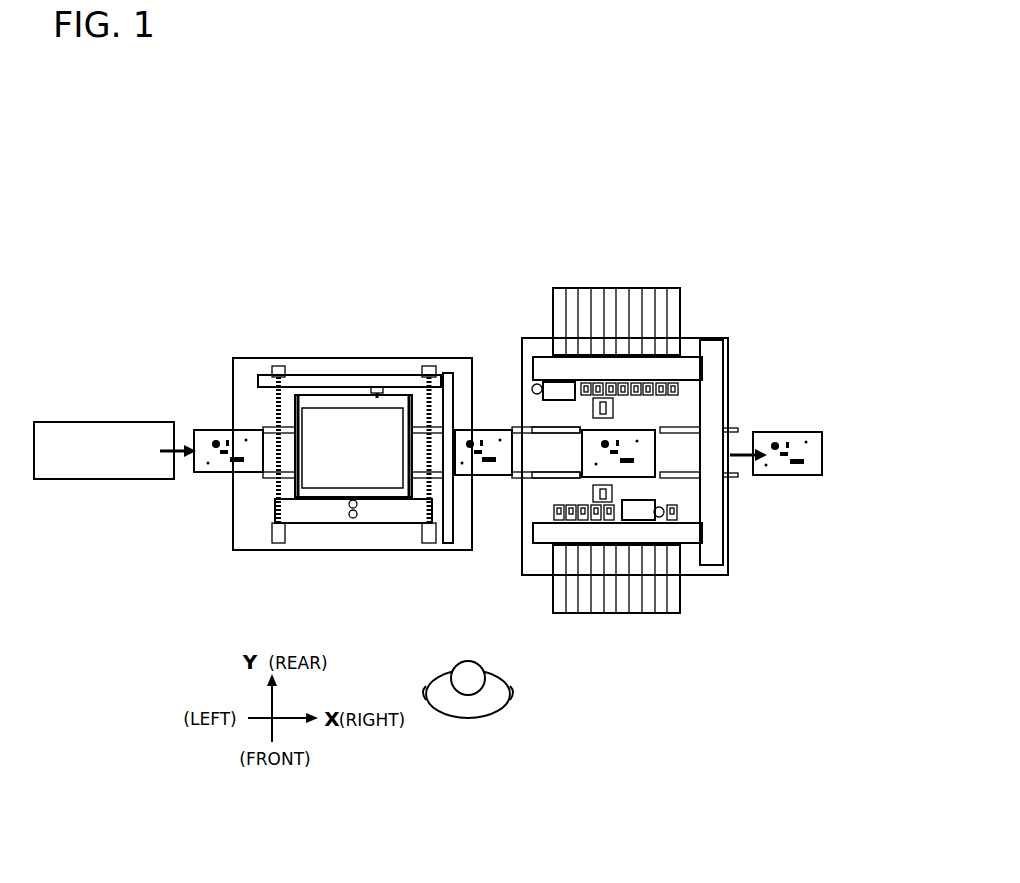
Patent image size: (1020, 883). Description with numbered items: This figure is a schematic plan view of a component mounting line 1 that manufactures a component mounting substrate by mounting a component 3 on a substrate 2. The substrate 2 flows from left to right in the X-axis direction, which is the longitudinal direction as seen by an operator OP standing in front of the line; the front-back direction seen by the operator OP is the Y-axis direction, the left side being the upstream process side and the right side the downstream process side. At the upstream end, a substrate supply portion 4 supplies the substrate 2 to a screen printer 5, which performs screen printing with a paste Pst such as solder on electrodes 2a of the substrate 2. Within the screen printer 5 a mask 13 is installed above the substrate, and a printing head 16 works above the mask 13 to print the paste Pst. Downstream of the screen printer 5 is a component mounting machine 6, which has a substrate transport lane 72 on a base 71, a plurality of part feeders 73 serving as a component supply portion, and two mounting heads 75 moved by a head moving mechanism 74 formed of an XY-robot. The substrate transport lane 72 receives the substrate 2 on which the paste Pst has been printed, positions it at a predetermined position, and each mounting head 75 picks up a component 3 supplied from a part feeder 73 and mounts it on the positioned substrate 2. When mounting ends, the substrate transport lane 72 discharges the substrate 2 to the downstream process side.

The component mounting line 1 is at (460, 140).
The substrate 2 is at (208, 432).
The electrodes 2a is at (218, 452).
The component 3 is at (801, 463).
The substrate supply portion 4 is at (113, 408).
The screen printer 5 is at (313, 345).
The component mounting machine 6 is at (706, 318).
The mask 13 is at (352, 418).
The printing head 16 is at (378, 517).
The base 71 is at (725, 571).
The substrate transport lane 72 is at (552, 427).
The part feeders 73 is at (648, 290).
The head moving mechanism 74 is at (736, 367).
The mounting heads 75 is at (548, 384).
The paste Pst is at (484, 479).
The operator OP is at (482, 708).